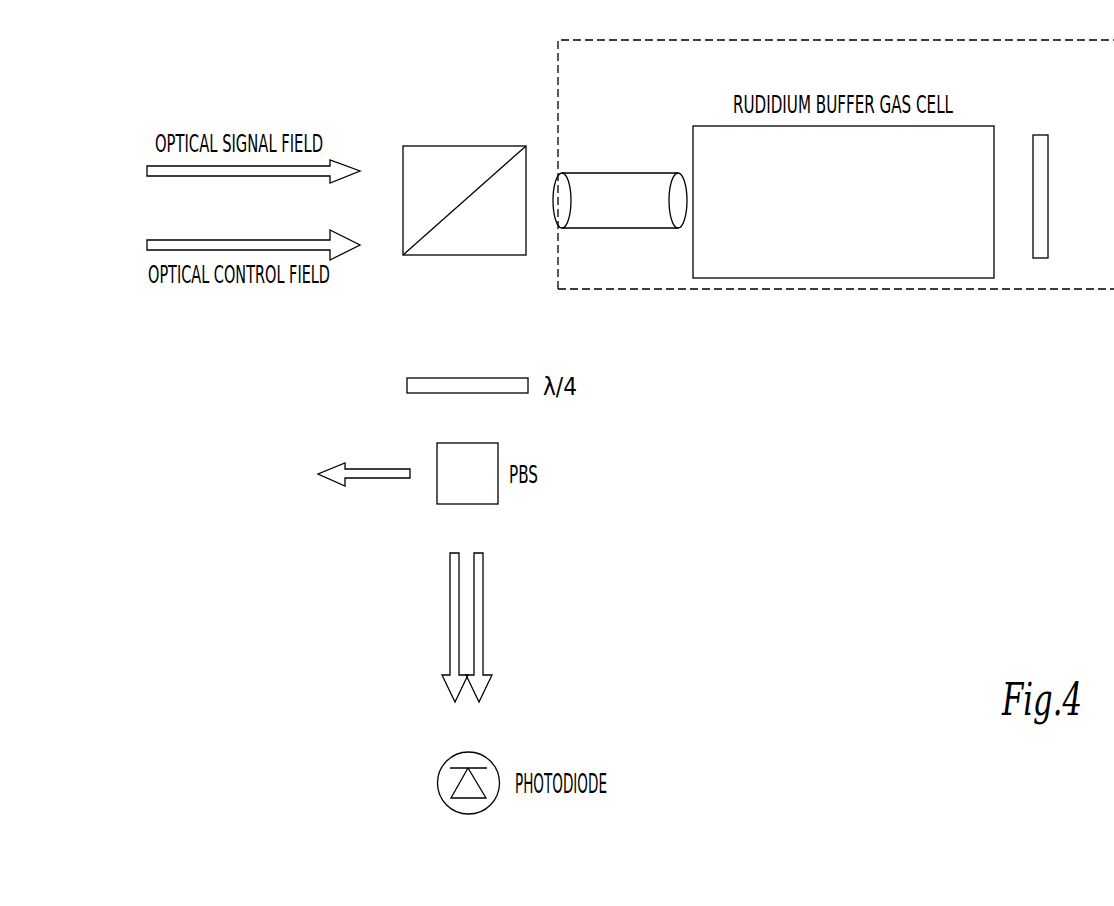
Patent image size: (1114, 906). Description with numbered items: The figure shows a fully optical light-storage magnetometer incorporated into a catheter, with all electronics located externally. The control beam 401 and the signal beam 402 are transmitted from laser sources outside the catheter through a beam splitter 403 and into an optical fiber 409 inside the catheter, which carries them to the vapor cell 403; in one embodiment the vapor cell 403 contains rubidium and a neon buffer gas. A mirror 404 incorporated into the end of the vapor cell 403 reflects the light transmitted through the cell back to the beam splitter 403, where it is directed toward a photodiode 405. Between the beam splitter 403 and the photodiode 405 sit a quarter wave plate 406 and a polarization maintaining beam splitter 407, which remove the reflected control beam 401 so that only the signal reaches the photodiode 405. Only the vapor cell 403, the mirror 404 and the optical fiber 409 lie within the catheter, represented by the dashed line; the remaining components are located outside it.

The control beam 401 is at (278, 178).
The signal beam 402 is at (196, 240).
The beam splitter / vapor cell 403 is at (461, 146).
The mirror 404 is at (1038, 135).
The photodiode 405 is at (466, 752).
The quarter wave plate 406 is at (466, 378).
The polarization maintaining beam splitter 407 is at (466, 443).
The optical fiber 409 is at (618, 174).